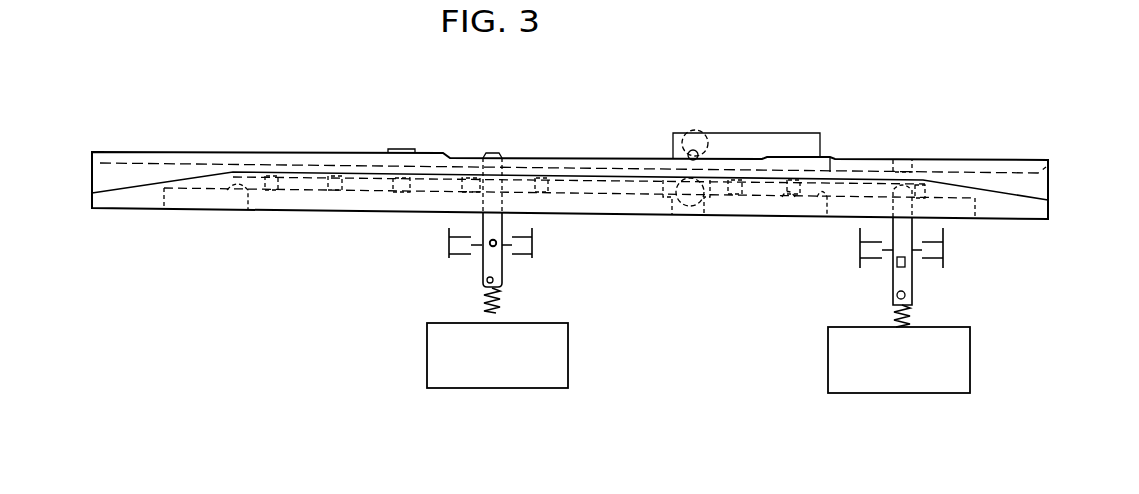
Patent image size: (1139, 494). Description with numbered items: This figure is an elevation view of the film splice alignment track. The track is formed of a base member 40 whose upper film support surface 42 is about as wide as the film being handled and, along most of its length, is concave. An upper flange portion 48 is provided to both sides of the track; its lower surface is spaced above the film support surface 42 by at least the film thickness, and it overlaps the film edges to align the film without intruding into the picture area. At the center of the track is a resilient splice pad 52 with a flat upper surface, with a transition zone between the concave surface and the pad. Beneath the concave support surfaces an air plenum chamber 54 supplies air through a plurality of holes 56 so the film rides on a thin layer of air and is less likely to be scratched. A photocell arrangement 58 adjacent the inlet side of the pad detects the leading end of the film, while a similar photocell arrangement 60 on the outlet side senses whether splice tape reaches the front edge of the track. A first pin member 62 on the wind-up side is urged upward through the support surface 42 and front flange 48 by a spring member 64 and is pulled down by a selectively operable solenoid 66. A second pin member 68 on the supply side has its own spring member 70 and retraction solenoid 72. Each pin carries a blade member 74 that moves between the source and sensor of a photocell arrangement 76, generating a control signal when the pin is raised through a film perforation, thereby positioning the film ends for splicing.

The base member 40 is at (1052, 210).
The upper film support surface 42 is at (832, 158).
The upper flange portion 48 is at (243, 150).
The resilient splice pad 52 is at (603, 165).
The air plenum chamber 54 is at (243, 200).
The holes 56 is at (270, 190).
The photocell arrangement 58 is at (697, 152).
The photocell arrangement 60 is at (405, 152).
The first pin member 62 is at (503, 227).
The spring member 64 is at (500, 305).
The solenoid 66 is at (503, 383).
The second pin member 68 is at (905, 227).
The spring member 70 is at (915, 315).
The retraction solenoid 72 is at (888, 388).
The blade member 74 is at (484, 246).
The photocell arrangement 76 is at (534, 248).